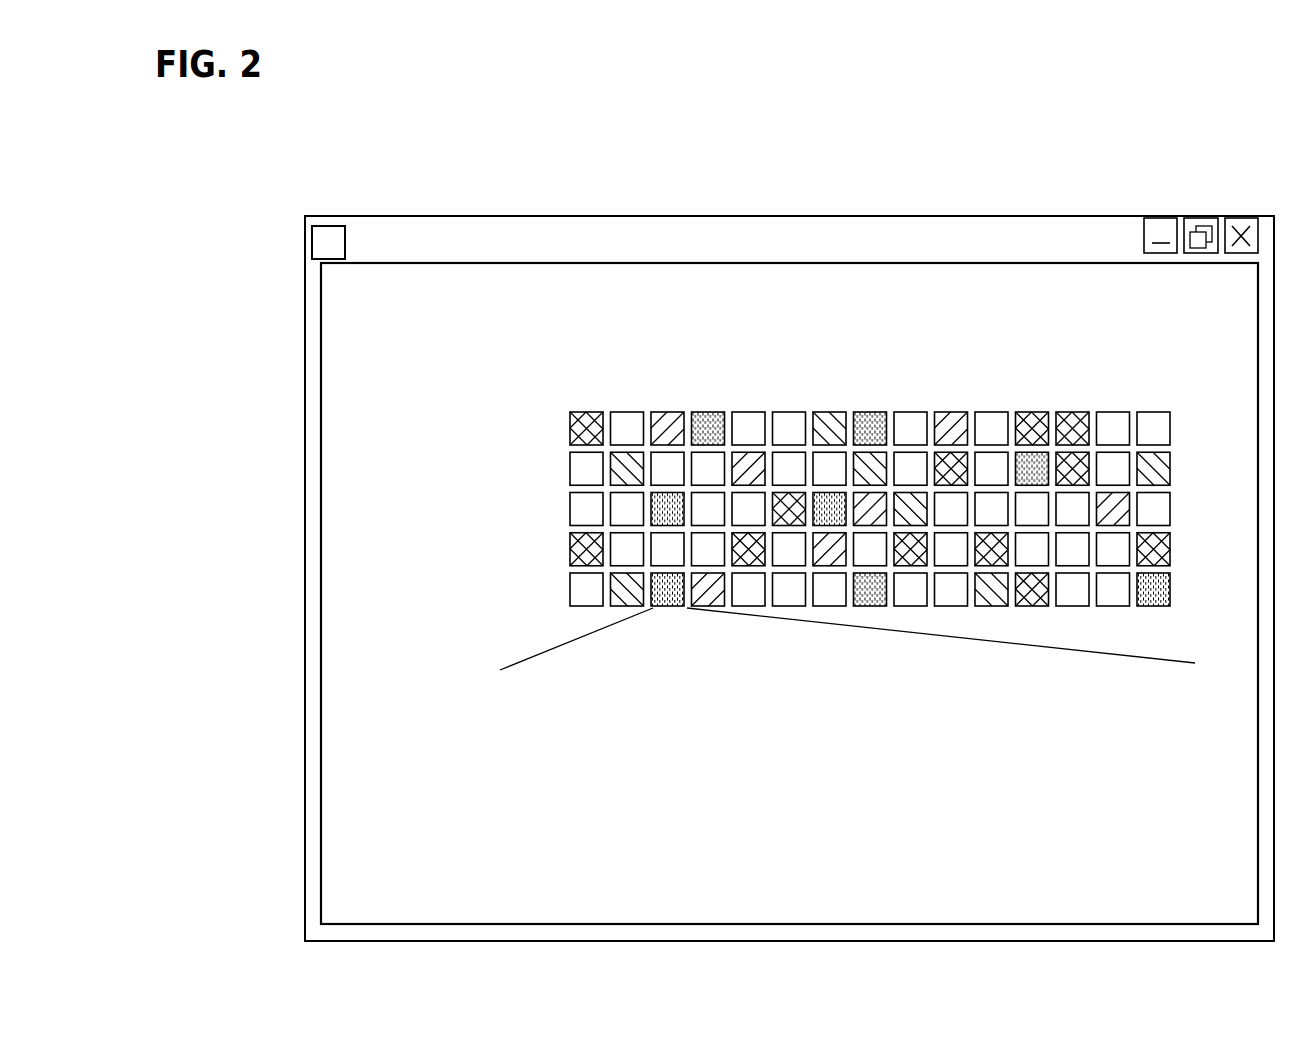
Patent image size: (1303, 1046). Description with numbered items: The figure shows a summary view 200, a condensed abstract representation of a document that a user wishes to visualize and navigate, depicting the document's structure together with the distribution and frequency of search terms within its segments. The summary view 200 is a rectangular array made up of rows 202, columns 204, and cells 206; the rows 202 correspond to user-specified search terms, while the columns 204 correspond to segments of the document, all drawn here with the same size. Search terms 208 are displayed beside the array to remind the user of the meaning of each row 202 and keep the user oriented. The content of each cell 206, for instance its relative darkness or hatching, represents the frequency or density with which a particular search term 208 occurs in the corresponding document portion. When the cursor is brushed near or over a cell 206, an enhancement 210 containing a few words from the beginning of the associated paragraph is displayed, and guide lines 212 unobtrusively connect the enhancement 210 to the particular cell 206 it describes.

The summary view 200 is at (950, 375).
The rows 202 is at (1178, 426).
The columns 204 is at (1153, 404).
The cells 206 is at (1172, 509).
The search terms 208 is at (490, 420).
The enhancement 210 is at (540, 690).
The guide lines 212 is at (1098, 652).